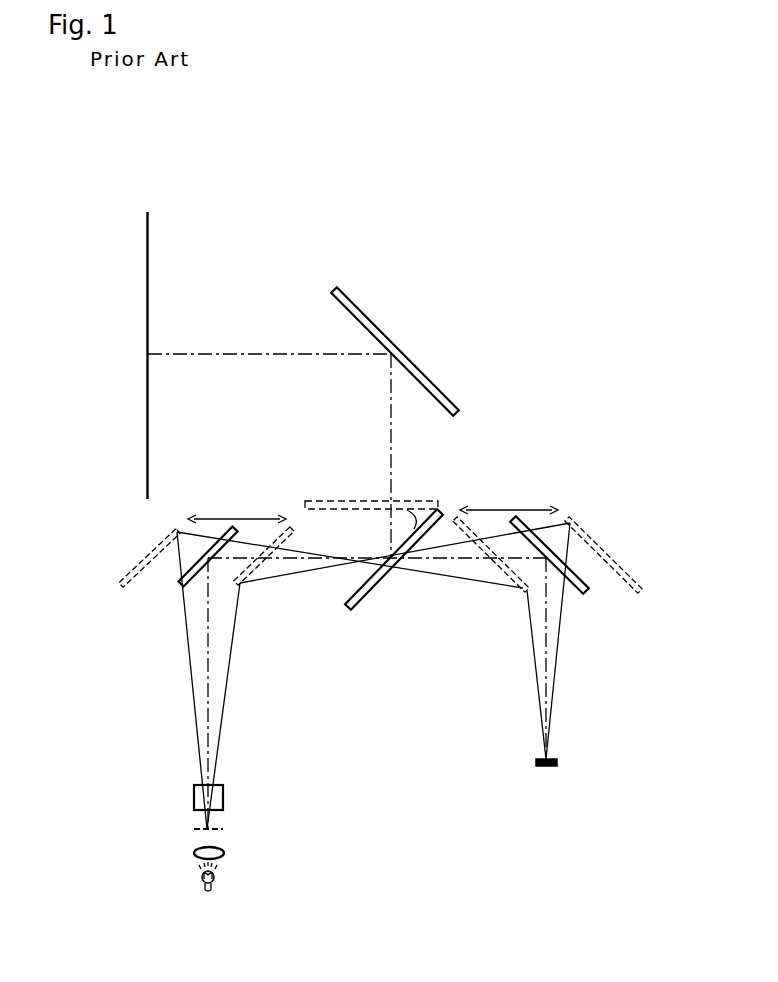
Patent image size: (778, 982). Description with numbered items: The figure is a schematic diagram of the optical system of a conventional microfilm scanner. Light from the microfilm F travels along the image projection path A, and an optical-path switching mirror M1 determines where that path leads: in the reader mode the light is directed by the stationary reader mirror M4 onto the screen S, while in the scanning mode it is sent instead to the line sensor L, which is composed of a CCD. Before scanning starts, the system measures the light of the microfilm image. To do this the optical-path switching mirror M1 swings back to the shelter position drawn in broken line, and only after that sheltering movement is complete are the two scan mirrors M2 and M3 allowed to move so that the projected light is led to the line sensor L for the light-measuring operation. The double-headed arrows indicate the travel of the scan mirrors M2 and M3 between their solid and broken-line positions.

The screen S is at (147, 235).
The image projection path A is at (262, 353).
The stationary reader mirror M4 is at (338, 292).
The optical-path switching mirror M1 is at (348, 501).
The scan mirror M2 is at (135, 588).
The scan mirror M3 is at (603, 548).
The film F is at (190, 830).
The line sensor L is at (547, 767).